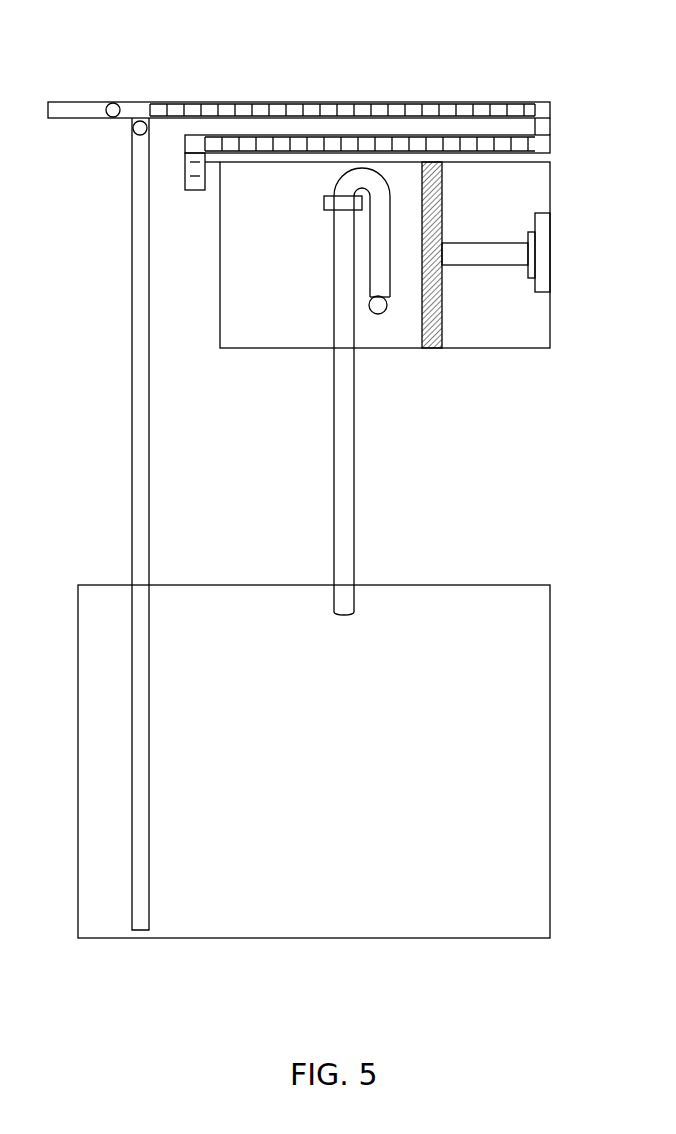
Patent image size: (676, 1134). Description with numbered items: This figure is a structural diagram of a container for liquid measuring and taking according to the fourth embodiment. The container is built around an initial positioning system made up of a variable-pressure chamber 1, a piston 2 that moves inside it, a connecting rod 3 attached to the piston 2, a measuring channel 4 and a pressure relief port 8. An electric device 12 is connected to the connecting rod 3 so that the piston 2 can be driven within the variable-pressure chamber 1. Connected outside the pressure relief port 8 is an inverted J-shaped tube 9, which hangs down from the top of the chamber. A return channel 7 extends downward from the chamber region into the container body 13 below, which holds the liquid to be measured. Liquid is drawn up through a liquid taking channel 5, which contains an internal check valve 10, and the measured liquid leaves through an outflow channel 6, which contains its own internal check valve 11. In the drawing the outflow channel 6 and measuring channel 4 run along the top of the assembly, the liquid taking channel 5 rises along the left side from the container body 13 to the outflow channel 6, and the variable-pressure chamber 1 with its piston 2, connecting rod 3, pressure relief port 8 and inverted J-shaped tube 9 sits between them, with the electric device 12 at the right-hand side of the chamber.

The variable-pressure chamber 1 is at (250, 312).
The piston 2 is at (430, 340).
The connecting rod 3 is at (478, 255).
The measuring channel 4 is at (462, 105).
The liquid taking channel 5 is at (133, 255).
The outflow channel 6 is at (58, 110).
The return channel 7 is at (330, 243).
The pressure relief port 8 is at (382, 315).
The inverted J-shaped tube 9 is at (377, 243).
The internal check valve 10 is at (136, 130).
The internal check valve 11 is at (113, 110).
The electric device 12 is at (548, 252).
The container body 13 is at (418, 640).